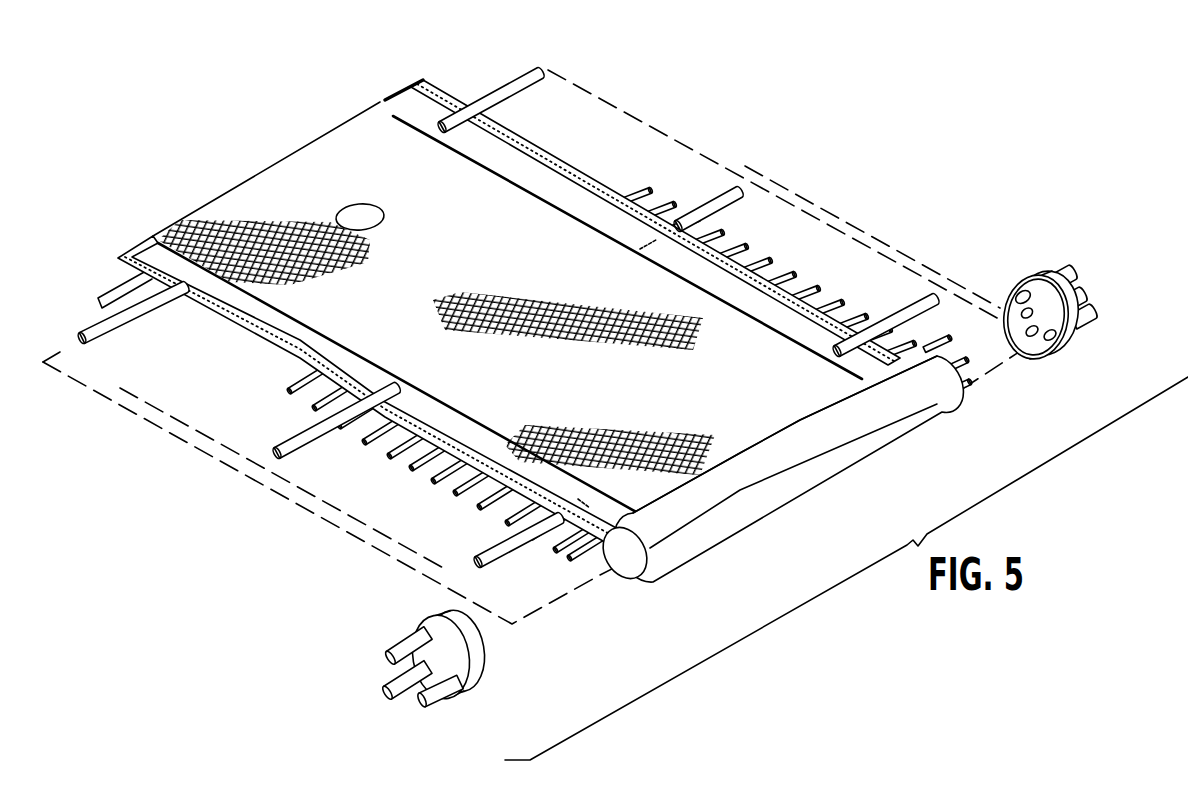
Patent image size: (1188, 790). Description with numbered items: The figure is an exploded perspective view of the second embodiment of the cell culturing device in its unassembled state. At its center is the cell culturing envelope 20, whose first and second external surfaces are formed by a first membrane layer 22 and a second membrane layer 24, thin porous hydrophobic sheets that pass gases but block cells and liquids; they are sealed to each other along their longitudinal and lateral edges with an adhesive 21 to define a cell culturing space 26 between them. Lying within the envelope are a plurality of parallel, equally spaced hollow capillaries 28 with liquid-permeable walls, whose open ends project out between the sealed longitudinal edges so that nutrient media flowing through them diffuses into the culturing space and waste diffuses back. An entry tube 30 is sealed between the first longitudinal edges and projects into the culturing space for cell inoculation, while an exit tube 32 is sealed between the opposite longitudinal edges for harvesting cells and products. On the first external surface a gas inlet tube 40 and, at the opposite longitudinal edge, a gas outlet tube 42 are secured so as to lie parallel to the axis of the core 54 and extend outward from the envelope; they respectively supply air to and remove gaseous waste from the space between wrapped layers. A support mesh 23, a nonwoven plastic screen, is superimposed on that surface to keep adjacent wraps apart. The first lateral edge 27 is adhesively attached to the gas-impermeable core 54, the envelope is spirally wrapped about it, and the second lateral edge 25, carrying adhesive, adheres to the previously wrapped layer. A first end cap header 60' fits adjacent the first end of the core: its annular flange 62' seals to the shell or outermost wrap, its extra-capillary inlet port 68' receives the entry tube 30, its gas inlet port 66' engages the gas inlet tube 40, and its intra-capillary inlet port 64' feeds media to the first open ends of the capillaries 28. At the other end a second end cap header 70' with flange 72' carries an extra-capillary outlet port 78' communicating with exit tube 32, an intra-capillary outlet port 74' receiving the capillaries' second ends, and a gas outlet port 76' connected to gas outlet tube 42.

The cell culturing envelope 20 is at (708, 136).
The adhesive 21 is at (446, 98).
The first membrane layer 22 is at (160, 240).
The support mesh 23 is at (250, 222).
The second membrane layer 24 is at (131, 282).
The second lateral edge 25 is at (284, 161).
The cell culturing space 26 is at (364, 214).
The first lateral edge 27 is at (778, 471).
The hollow fibers or capillaries 28 is at (432, 470).
The entry tube 30 is at (85, 331).
The exit tube 32 is at (731, 199).
The gas inlet tube 40 is at (301, 438).
The gas outlet tube 42 is at (506, 80).
The core 54 is at (730, 485).
The first end cap header 60' is at (432, 678).
The annular shoulder or flange 62' is at (474, 656).
The intra-capillary inlet port 64' is at (438, 713).
The gas inlet port 66' is at (377, 690).
The extra-capillary inlet port 68' is at (382, 636).
The second end cap header 70' is at (1081, 301).
The annular shoulder or flange 72' is at (1038, 295).
The intra-capillary outlet port 74' is at (1119, 323).
The gas outlet port 76' is at (1108, 287).
The extra-capillary outlet port 78' is at (1083, 249).